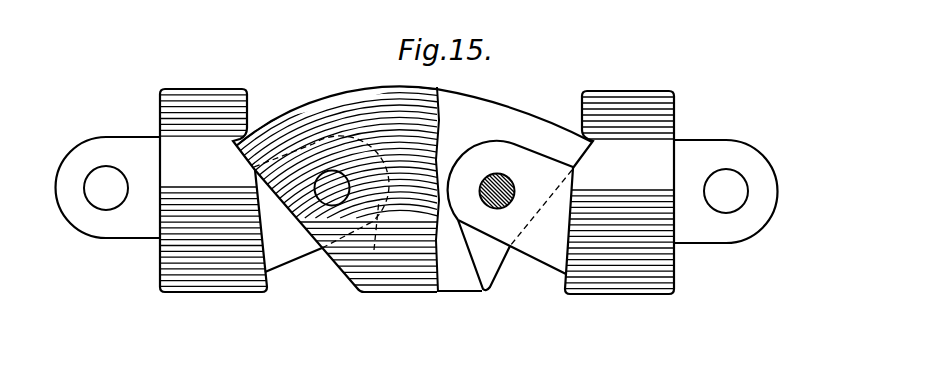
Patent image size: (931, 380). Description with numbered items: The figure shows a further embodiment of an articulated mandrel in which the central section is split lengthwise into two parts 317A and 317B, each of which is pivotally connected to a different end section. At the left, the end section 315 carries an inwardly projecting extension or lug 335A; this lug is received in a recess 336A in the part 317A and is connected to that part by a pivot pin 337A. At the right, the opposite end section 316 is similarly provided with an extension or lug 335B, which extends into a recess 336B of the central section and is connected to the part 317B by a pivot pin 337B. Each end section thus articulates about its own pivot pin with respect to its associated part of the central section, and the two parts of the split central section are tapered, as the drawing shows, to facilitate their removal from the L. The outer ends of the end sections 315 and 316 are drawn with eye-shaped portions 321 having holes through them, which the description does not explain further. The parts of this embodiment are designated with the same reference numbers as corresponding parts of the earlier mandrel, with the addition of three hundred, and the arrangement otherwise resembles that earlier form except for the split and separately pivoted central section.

The end section 315 is at (208, 291).
The end section 316 is at (617, 285).
The eye end 321 is at (104, 142).
The part of central section 317A is at (463, 108).
The part of central section 317B is at (378, 113).
The extension or lug 335A is at (277, 262).
The extension or lug 335B is at (550, 258).
The recess 336A is at (374, 250).
The recess 336B is at (492, 282).
The pivot pin 337A is at (329, 181).
The pivot pin 337B is at (499, 177).